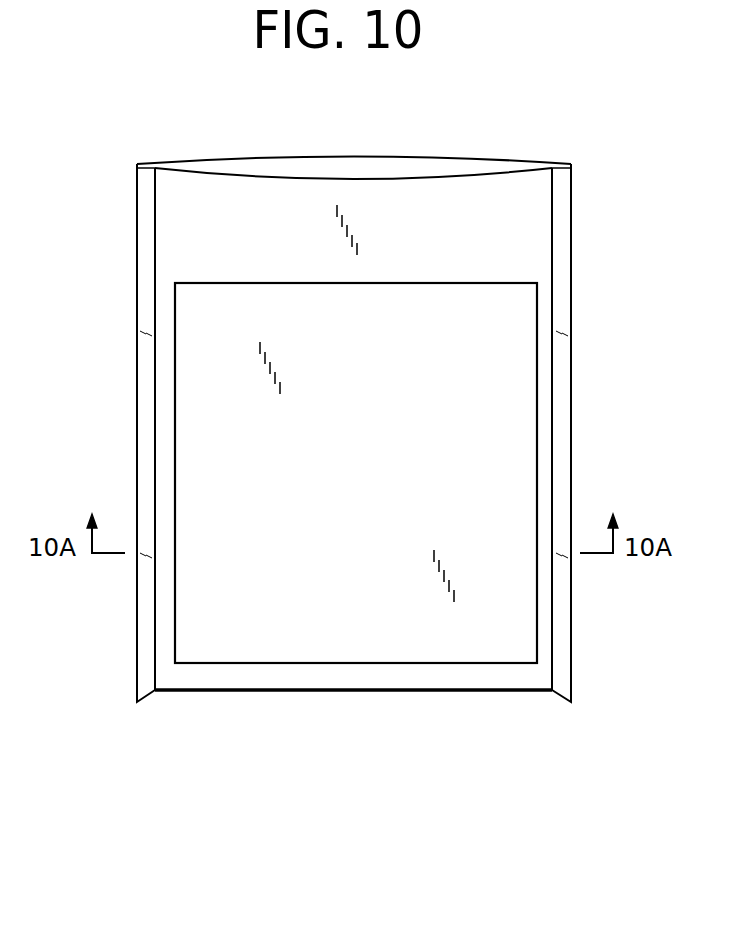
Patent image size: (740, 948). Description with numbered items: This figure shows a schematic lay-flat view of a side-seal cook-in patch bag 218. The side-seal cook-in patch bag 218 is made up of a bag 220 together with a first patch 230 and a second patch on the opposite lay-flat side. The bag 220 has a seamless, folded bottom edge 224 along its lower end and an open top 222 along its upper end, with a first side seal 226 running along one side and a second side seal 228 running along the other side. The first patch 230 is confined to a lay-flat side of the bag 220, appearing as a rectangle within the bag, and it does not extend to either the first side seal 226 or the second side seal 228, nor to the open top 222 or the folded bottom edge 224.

The side-seal cook-in patch bag 218 is at (118, 266).
The bag 220 is at (487, 245).
The open top 222 is at (398, 160).
The seamless bottom edge 224 is at (478, 692).
The first side seal 226 is at (155, 426).
The second side seal 228 is at (552, 466).
The first patch 230 is at (482, 337).